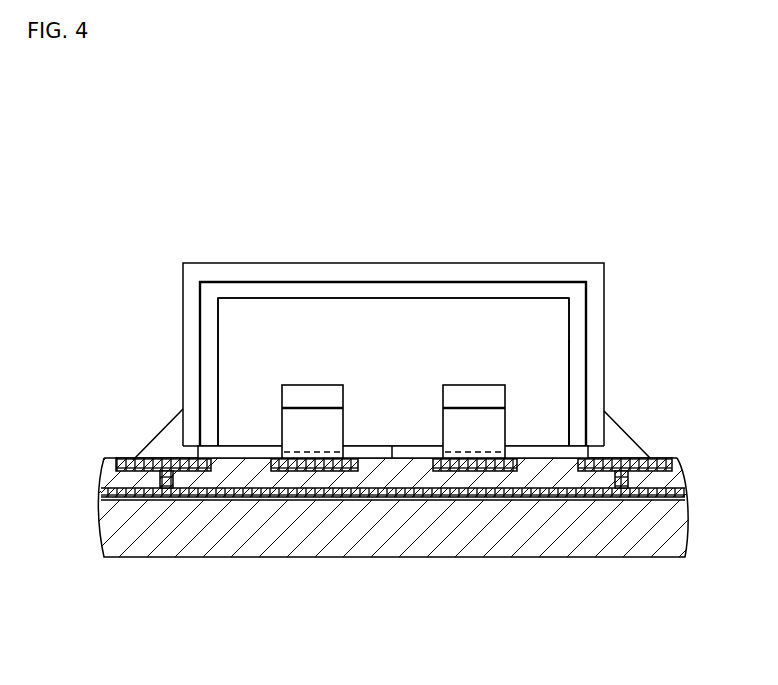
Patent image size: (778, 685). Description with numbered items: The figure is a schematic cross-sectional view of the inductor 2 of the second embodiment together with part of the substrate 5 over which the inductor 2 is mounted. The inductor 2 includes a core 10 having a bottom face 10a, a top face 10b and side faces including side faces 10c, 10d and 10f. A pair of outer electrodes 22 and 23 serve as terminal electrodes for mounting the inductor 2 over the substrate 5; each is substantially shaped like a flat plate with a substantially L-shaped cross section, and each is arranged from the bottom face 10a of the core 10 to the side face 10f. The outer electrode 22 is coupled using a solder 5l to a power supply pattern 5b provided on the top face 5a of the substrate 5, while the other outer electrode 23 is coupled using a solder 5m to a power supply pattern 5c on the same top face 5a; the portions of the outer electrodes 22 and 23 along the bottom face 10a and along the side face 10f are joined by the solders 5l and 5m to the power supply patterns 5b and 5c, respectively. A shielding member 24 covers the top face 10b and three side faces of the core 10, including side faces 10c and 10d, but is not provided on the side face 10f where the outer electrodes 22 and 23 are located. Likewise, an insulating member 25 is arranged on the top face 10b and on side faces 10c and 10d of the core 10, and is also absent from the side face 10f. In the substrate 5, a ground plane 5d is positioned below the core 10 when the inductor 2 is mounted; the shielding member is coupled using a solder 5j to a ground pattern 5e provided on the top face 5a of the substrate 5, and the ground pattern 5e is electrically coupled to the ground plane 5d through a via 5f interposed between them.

The inductor 2 is at (392, 216).
The substrate 5 is at (226, 557).
The top face of the substrate 5a is at (110, 458).
The power supply pattern 5b is at (281, 467).
The power supply pattern 5c is at (508, 467).
The ground plane 5d is at (352, 497).
The ground pattern 5e is at (121, 466).
The via 5f is at (167, 482).
The solder 5j is at (171, 420).
The solder 5l is at (293, 443).
The solder 5m is at (498, 440).
The core 10 is at (447, 305).
The bottom face of the core 10a is at (392, 456).
The top face of the core 10b is at (337, 299).
The side face of the core 10c is at (220, 328).
The side face of the core 10d is at (570, 343).
The side face of the core 10f is at (560, 368).
The outer electrode 22 is at (293, 397).
The outer electrode 23 is at (495, 397).
The shielding member 24 is at (600, 265).
The insulating member 25 is at (560, 283).